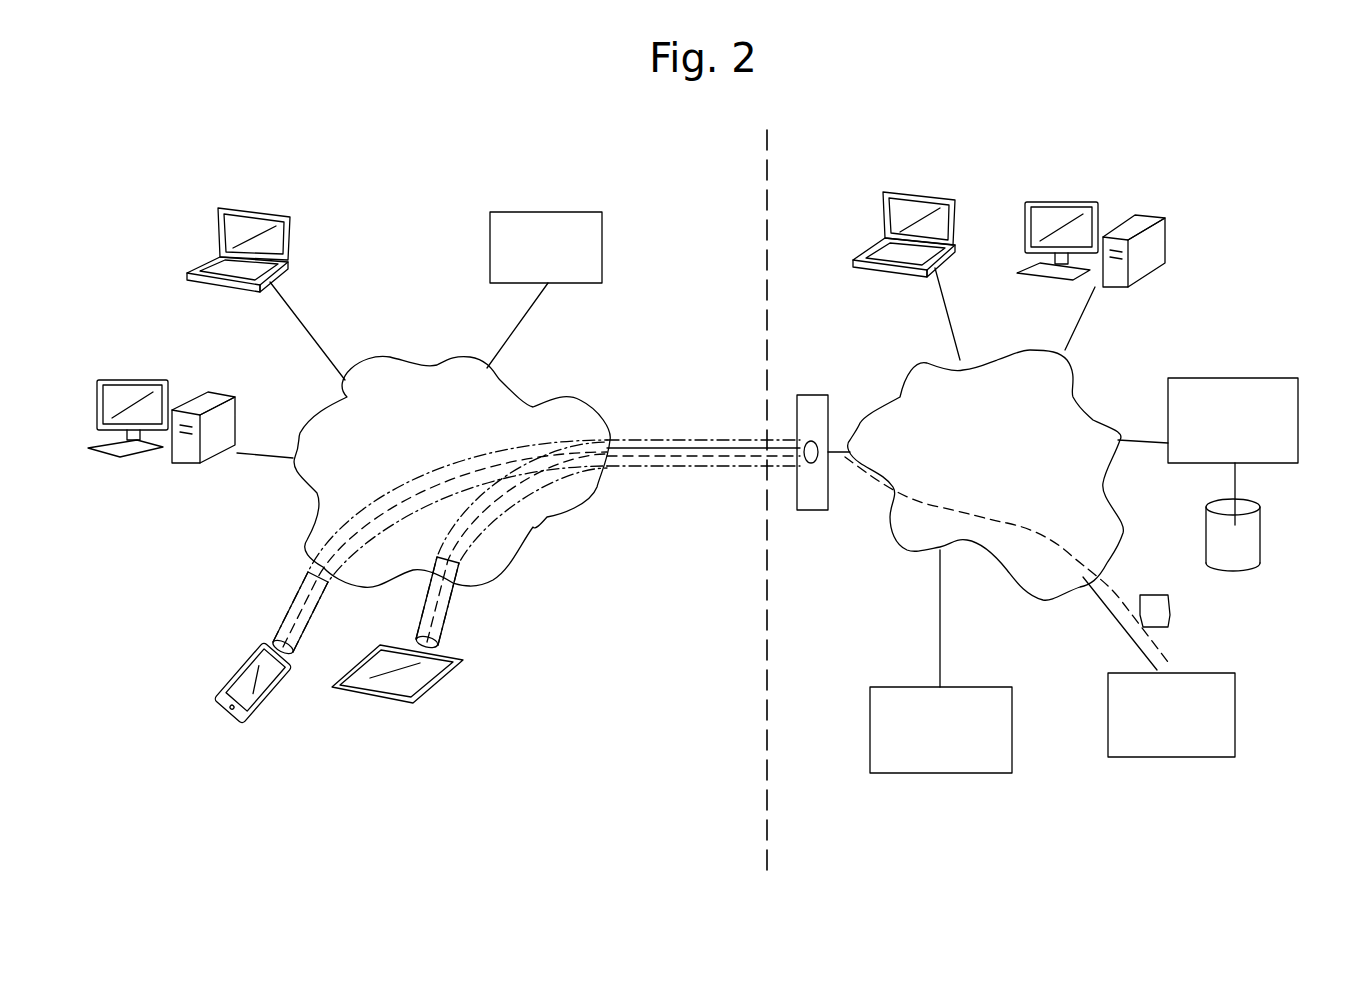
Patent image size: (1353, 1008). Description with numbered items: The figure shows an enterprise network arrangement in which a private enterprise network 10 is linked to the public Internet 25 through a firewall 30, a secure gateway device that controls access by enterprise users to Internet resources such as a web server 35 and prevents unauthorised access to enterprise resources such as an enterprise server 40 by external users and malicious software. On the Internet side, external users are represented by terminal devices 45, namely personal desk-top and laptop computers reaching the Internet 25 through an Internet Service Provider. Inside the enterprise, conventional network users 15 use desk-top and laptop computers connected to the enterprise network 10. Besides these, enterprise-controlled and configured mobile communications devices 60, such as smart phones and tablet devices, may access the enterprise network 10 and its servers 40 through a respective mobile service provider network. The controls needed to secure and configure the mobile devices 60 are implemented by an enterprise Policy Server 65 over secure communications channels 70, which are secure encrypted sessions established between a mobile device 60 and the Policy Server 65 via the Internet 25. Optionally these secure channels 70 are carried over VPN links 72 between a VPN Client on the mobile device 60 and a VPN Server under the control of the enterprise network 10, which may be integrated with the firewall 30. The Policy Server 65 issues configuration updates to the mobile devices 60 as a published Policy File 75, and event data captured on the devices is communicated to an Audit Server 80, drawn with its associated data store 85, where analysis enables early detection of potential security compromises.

The enterprise network 10 is at (1052, 578).
The corporate terminal devices 15 is at (905, 200).
The Internet 25 is at (525, 520).
The firewall 30 is at (812, 405).
The web server 35 is at (587, 222).
The enterprise server 40 is at (940, 767).
The terminal devices 45 is at (225, 230).
The mobile communications devices 60 is at (245, 680).
The Policy Server 65 is at (1165, 750).
The secure communications channels 70 is at (310, 615).
The VPN links 72 is at (300, 578).
The Policy File 75 is at (1165, 612).
The Audit Server 80 is at (1280, 410).
The audit database 85 is at (1250, 545).